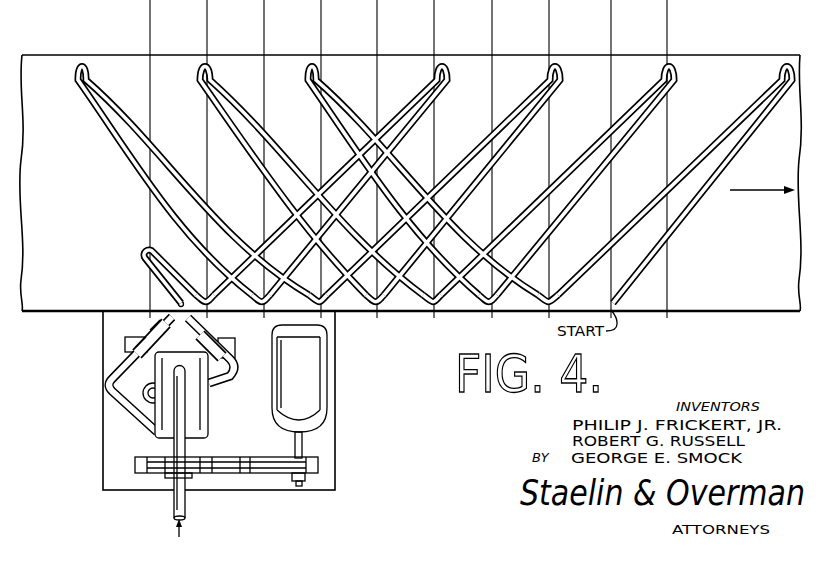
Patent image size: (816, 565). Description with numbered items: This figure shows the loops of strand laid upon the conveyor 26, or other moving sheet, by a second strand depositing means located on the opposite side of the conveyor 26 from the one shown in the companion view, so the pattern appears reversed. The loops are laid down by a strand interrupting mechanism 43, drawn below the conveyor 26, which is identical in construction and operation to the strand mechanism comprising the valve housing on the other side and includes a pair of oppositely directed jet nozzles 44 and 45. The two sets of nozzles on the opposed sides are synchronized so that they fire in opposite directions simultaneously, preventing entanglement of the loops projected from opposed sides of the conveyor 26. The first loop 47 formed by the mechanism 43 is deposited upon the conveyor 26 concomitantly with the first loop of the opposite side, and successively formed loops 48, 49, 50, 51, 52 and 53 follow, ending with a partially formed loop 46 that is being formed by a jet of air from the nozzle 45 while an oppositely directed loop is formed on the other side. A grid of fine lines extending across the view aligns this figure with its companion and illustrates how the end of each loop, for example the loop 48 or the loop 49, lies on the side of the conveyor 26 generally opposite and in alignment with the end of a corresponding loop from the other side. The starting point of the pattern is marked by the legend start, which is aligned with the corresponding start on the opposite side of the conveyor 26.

The conveyor 26 is at (696, 52).
The strand interrupting mechanism 43 is at (232, 424).
The jet nozzle 44 is at (170, 322).
The jet nozzle 45 is at (212, 334).
The partially formed loop 46 is at (142, 254).
The first loop 47 is at (775, 62).
The loop 48 is at (312, 62).
The loop 49 is at (668, 64).
The loop 50 is at (205, 62).
The loop 51 is at (557, 62).
The loop 52 is at (83, 62).
The loop 53 is at (442, 62).